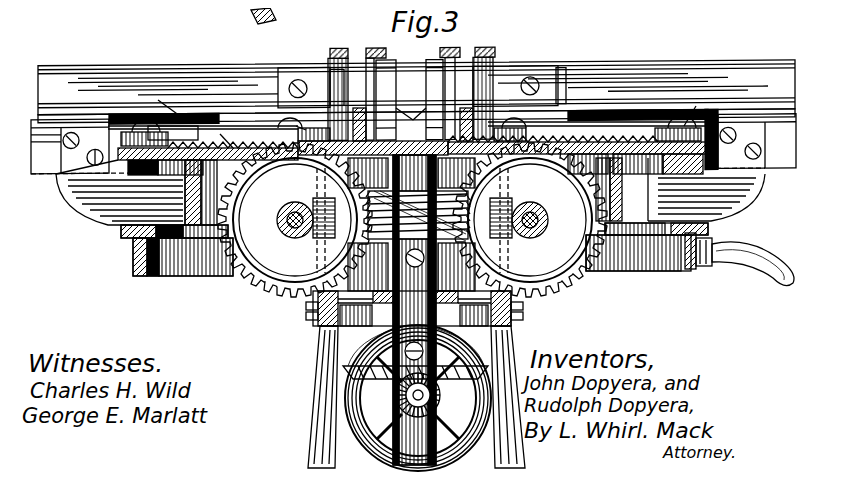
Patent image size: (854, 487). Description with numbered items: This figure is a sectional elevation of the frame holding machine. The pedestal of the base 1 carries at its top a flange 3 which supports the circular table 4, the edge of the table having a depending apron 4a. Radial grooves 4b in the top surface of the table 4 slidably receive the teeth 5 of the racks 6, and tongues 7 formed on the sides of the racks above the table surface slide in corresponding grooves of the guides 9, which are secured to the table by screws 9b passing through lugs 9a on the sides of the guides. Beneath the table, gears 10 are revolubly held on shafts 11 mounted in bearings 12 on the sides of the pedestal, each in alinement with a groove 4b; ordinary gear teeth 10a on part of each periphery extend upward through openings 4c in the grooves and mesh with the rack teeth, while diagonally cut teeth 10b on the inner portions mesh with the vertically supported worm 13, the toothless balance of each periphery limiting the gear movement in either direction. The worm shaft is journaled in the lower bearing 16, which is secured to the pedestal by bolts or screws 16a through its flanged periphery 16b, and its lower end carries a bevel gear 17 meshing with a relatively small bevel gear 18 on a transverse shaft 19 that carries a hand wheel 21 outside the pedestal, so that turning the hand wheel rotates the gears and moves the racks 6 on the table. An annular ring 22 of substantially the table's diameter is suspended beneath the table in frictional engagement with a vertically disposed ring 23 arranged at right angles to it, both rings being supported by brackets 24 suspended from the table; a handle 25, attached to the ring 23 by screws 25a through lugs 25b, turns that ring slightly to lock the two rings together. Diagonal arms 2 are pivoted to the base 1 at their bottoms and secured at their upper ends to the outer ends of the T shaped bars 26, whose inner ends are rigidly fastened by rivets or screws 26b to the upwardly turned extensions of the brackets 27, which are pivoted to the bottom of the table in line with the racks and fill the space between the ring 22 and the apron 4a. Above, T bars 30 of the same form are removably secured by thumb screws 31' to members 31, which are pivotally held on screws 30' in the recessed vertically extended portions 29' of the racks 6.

The base 1 is at (345, 110).
The diagonal arms 2 is at (424, 155).
The flange 3 is at (290, 173).
The circular table 4 is at (160, 145).
The depending apron 4a is at (100, 162).
The grooves 4b is at (185, 140).
The openings 4c is at (230, 132).
The teeth 5 is at (413, 134).
The racks 6 is at (115, 124).
The tongues 7 is at (411, 110).
The guides 9 is at (618, 118).
The lugs 9a is at (138, 122).
The screws 9b is at (436, 105).
The gears 10 is at (334, 457).
The ordinary gear teeth 10a is at (180, 193).
The diagonally cut teeth 10b is at (412, 216).
The shafts 11 is at (283, 230).
The bearings 12 is at (411, 225).
The worm 13 is at (360, 211).
The lower bearing 16 is at (412, 308).
The bolts or screws 16a is at (298, 297).
The flanged periphery 16b is at (298, 308).
The bevel gear 17 is at (340, 363).
The small bevel gear 18 is at (388, 387).
The transverse shaft 19 is at (422, 387).
The hand wheel 21 is at (442, 449).
The annular ring 22 is at (112, 225).
The ring 23 is at (125, 244).
The brackets 24 is at (414, 310).
The handle 25 is at (757, 269).
The screws 25a is at (700, 258).
The lugs 25b is at (682, 262).
The T shaped bars 26 is at (772, 172).
The rivets or screws 26b is at (60, 167).
The brackets 27 is at (60, 172).
The recessed vertically extended portions 29' is at (409, 92).
The T bars 30 is at (416, 91).
The screws 30' is at (411, 82).
The members 31 is at (401, 75).
The thumb screws 31' is at (434, 71).